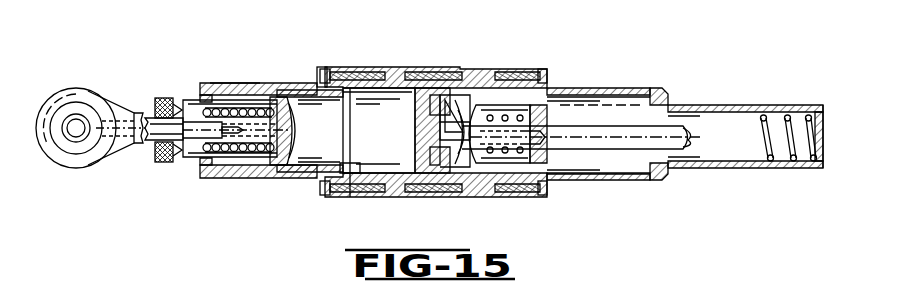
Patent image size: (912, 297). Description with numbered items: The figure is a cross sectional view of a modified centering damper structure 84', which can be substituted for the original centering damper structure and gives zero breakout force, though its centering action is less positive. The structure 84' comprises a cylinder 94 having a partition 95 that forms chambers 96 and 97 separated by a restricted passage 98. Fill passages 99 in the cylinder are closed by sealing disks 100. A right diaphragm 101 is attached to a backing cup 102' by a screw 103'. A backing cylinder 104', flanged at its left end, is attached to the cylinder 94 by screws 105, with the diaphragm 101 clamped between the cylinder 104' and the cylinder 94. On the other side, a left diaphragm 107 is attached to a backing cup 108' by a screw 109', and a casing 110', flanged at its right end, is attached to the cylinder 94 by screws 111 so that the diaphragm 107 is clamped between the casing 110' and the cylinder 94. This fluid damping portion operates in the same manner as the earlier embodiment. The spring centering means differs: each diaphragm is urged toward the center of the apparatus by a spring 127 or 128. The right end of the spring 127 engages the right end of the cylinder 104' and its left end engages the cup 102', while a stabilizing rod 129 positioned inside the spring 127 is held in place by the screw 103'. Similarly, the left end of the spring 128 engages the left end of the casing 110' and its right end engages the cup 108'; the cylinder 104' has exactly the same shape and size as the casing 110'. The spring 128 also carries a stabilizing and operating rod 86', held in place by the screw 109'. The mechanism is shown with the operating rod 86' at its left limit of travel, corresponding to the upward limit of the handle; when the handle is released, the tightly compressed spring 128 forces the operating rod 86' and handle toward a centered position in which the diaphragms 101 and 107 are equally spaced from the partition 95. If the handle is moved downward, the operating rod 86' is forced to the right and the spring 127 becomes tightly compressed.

The centering damper structure 84' is at (722, 92).
The operating rod 86' is at (93, 143).
The cylinder 94 is at (480, 72).
The partition 95 is at (428, 160).
The chamber 96 is at (350, 198).
The chamber 97 is at (478, 165).
The restricted passage 98 is at (440, 134).
The fill passages 99 is at (463, 68).
The sealing disks 100 is at (432, 66).
The right diaphragm 101 is at (512, 176).
The backing cup 102' is at (598, 164).
The screw 103' is at (391, 130).
The backing cylinder 104' is at (574, 149).
The screws 105 is at (546, 70).
The left diaphragm 107 is at (300, 166).
The backing cup 108' is at (236, 152).
The screw 109' is at (310, 131).
The casing 110' is at (297, 55).
The screws 111 is at (314, 68).
The spring 127 is at (782, 160).
The spring 128 is at (190, 100).
The stabilizing rod 129 is at (692, 135).